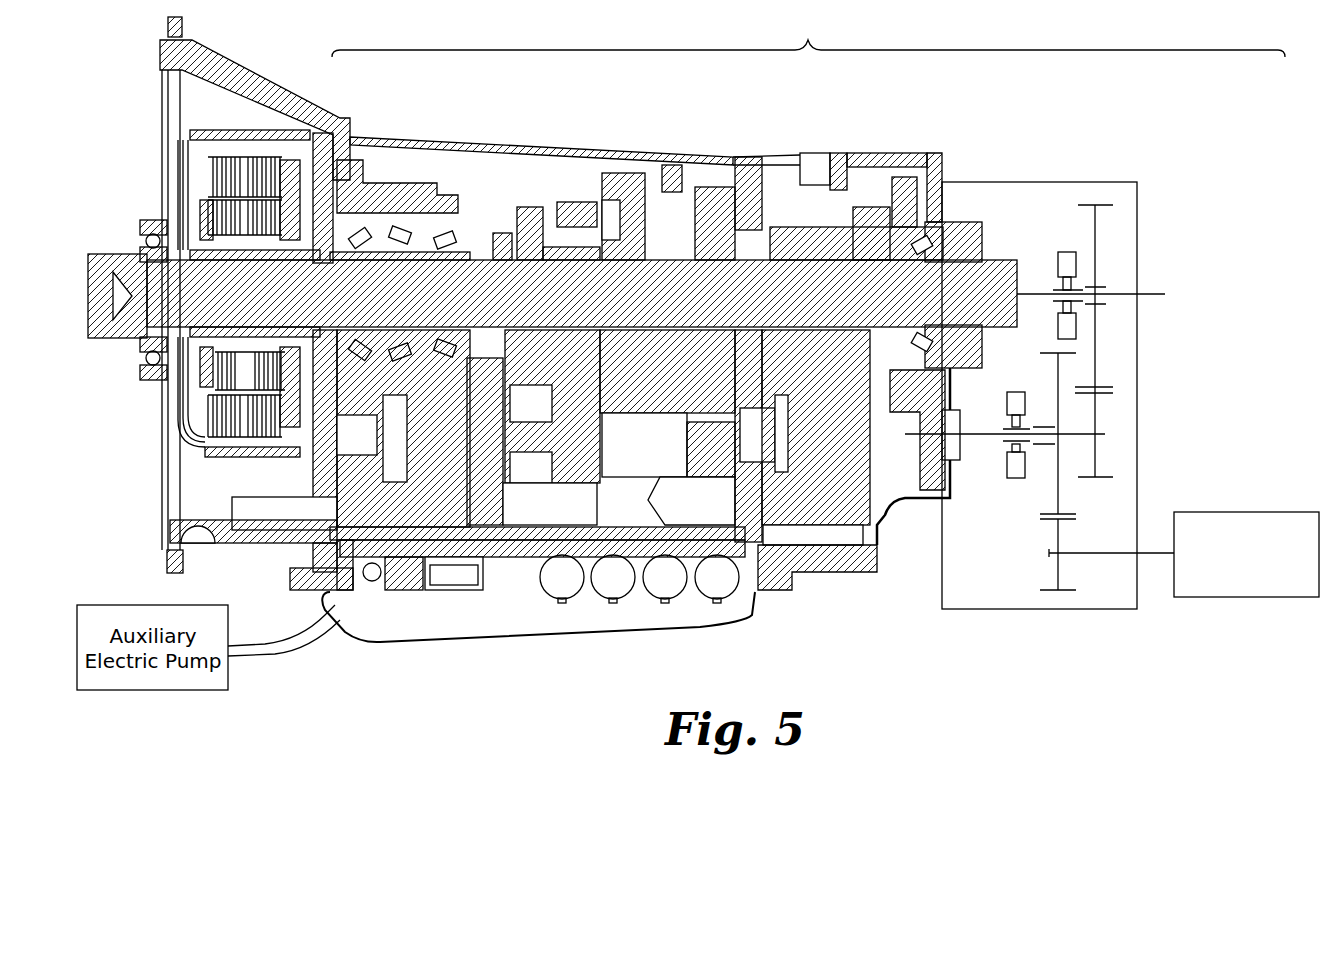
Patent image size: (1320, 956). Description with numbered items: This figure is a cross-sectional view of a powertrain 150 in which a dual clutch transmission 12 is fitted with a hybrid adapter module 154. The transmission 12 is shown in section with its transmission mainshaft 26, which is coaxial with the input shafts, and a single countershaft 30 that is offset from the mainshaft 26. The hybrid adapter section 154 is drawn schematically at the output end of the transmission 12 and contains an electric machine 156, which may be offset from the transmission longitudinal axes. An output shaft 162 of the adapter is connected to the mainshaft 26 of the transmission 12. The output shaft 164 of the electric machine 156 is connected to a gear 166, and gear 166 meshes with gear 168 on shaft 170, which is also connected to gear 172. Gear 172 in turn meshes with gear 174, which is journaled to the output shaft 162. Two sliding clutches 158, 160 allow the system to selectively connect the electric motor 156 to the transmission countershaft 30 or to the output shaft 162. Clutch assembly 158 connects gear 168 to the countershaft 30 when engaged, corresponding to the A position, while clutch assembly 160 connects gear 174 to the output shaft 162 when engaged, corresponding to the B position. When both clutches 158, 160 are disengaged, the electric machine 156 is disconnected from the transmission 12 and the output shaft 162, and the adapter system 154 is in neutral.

The dual clutch transmission 12 is at (628, 112).
The transmission mainshaft 26 is at (763, 307).
The countershaft 30 is at (900, 445).
The powertrain 150 is at (808, 37).
The hybrid adapter module 154 is at (1040, 182).
The electric machine 156 is at (1250, 512).
The clutch assembly 158 is at (1013, 483).
The clutch assembly 160 is at (1056, 253).
The output shaft 162 is at (1153, 293).
The output shaft of the electric machine 164 is at (1102, 555).
The gear 166 is at (1065, 590).
The gear 168 is at (1060, 488).
The shaft 170 is at (1078, 433).
The gear 172 is at (1097, 460).
The gear 174 is at (1097, 348).